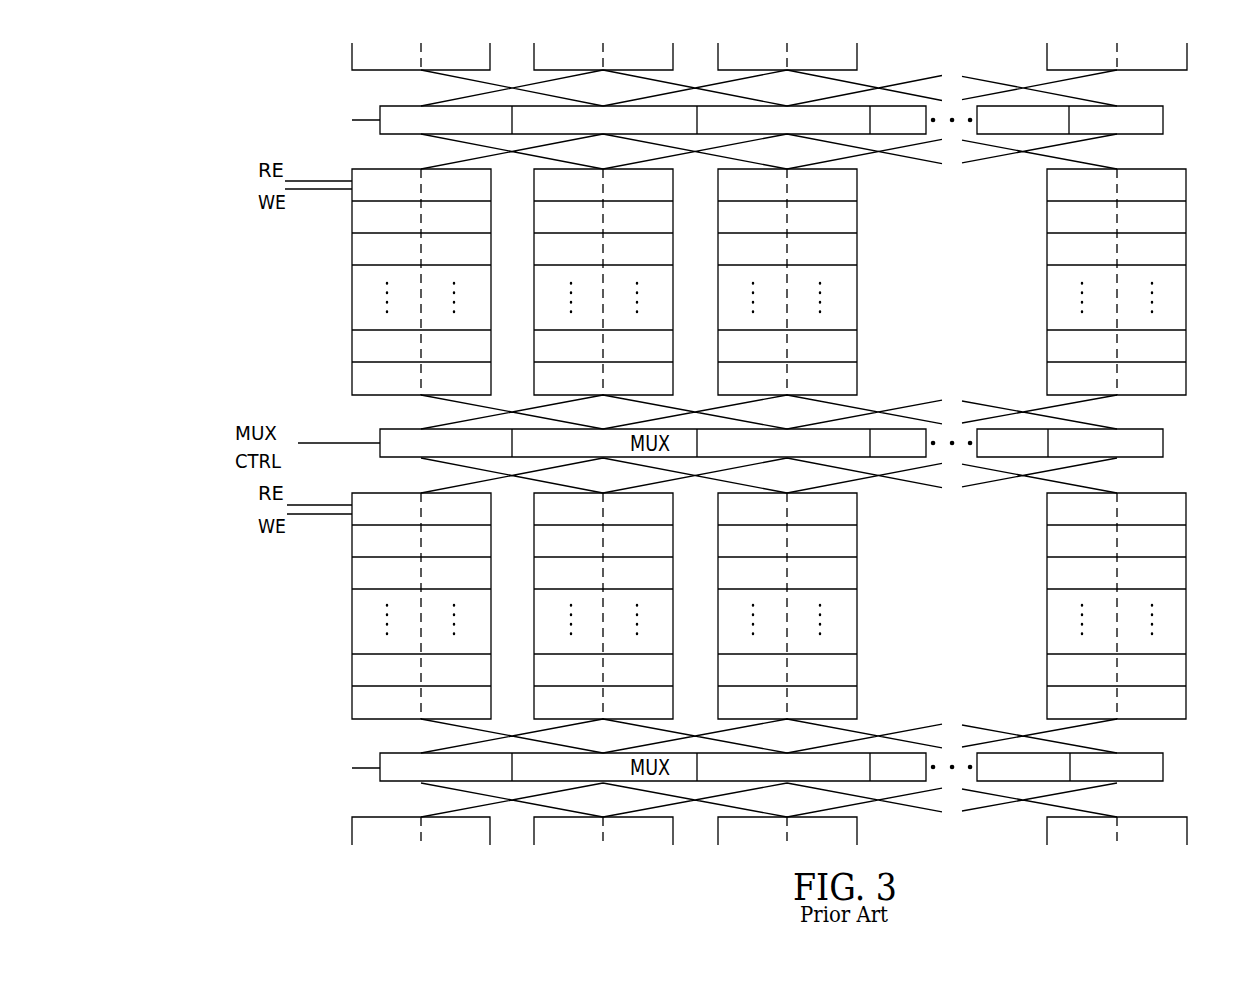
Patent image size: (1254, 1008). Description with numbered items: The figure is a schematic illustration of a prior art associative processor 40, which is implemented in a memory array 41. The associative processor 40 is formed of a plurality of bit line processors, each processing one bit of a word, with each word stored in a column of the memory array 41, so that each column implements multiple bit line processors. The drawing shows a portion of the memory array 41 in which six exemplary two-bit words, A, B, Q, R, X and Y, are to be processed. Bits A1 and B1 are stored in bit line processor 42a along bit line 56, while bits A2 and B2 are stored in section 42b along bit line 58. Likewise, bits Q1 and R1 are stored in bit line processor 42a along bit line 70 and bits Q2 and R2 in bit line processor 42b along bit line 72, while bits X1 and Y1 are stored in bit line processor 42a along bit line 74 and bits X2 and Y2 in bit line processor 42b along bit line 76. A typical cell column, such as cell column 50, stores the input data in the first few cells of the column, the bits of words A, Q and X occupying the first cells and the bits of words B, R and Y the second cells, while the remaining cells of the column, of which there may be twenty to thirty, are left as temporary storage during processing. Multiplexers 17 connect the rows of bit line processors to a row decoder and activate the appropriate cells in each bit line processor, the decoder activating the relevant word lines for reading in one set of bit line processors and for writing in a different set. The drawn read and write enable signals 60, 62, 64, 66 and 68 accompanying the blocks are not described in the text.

The associative processor 40 is at (295, 92).
The memory array 41 is at (458, 55).
The bit line processor 42a is at (652, 282).
The bit line processor 42b is at (655, 606).
The cell column 50 is at (352, 252).
The bit line 56 is at (418, 302).
The bit line 58 is at (322, 180).
The write enable line 60 is at (322, 189).
The memory block 62 is at (534, 293).
The memory block 64 is at (352, 640).
The memory block 66 is at (535, 618).
The memory block 68 is at (856, 630).
The bit line 70 is at (603, 283).
The bit line 72 is at (603, 607).
The bit line 74 is at (787, 283).
The bit line 76 is at (787, 607).
The multiplexers 17 is at (313, 445).